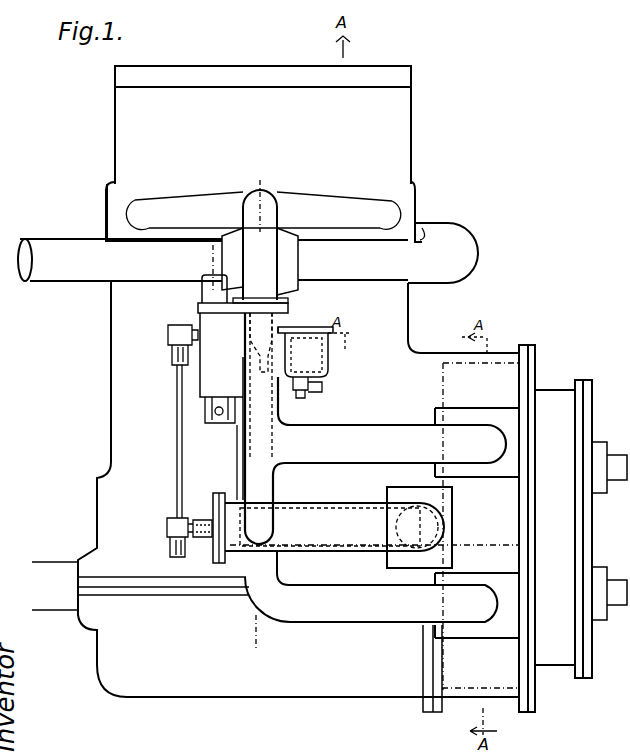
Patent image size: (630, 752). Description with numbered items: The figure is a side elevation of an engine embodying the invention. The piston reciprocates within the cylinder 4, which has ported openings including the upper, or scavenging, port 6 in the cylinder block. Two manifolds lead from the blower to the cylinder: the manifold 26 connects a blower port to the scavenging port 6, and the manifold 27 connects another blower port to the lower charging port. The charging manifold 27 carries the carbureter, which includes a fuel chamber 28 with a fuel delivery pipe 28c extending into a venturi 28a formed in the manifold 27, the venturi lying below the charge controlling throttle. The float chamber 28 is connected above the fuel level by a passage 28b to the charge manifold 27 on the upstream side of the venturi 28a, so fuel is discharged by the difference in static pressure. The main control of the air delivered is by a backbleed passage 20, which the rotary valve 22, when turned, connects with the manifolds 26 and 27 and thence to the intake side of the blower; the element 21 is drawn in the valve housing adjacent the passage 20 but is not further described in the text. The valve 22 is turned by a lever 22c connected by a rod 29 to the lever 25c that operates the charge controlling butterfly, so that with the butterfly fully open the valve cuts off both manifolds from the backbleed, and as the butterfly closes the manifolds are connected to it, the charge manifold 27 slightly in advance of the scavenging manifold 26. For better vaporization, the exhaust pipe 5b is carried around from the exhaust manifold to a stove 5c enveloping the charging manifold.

The cylinder 4 is at (392, 133).
The exhaust pipe 5b is at (248, 253).
The stove 5c is at (260, 261).
The scavenging port 6 is at (211, 253).
The backbleed passage 20 is at (372, 540).
The valve passage 21 is at (285, 545).
The rotary valve 22 is at (283, 506).
The lever 22c is at (167, 528).
The lever 25c is at (168, 333).
The manifold 26 is at (268, 230).
The manifold 27 is at (255, 662).
The fuel chamber 28 is at (320, 373).
The venturi 28a is at (248, 346).
The passage 28b is at (283, 330).
The fuel delivery pipe 28c is at (258, 362).
The rod 29 is at (177, 393).